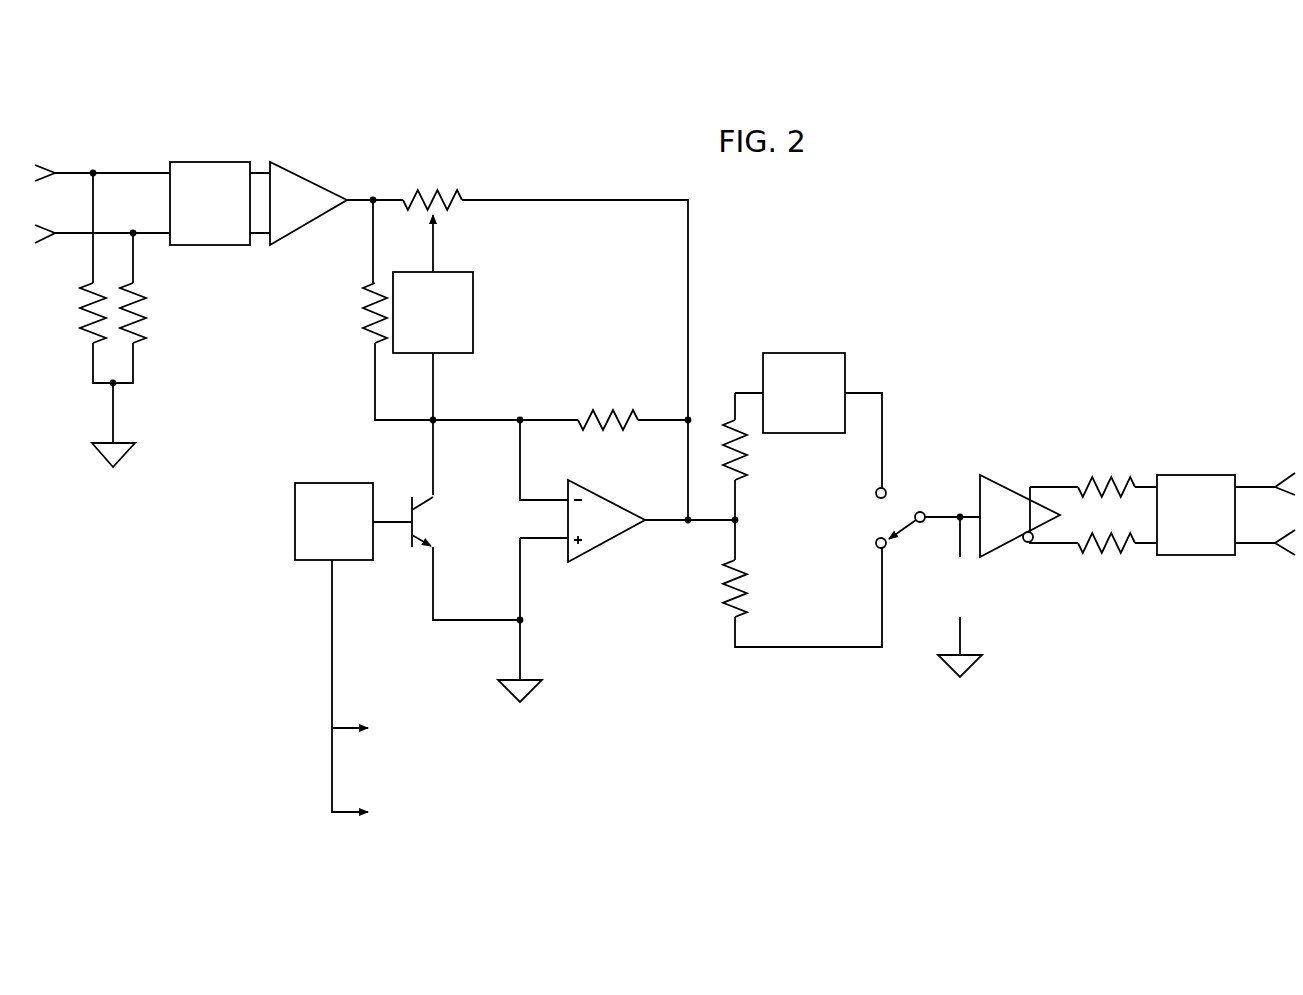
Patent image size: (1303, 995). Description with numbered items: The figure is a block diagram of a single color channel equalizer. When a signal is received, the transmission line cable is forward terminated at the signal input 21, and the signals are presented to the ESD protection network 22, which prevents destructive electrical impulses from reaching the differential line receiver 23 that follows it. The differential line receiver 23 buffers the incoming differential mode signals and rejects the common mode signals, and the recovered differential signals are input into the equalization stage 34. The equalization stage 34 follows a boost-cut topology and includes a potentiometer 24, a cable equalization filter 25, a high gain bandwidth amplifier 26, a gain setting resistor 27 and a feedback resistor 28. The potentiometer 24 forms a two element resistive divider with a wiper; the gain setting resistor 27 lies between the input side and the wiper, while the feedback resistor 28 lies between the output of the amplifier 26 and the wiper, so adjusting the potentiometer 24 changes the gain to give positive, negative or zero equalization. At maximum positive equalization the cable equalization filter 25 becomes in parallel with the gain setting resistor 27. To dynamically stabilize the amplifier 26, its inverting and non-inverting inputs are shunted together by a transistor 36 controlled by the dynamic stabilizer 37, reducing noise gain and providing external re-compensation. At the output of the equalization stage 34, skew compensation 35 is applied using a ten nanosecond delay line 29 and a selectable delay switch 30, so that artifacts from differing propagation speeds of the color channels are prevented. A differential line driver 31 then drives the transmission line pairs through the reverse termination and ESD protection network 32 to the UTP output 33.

The signal input 21 is at (85, 147).
The ESD protection network 22 is at (212, 147).
The differential line receiver 23 is at (307, 147).
The potentiometer 24 is at (445, 160).
The cable equalization filter 25 is at (492, 275).
The high gain bandwidth amplifier 26 is at (613, 572).
The gain setting resistor 27 is at (330, 337).
The feedback resistor 28 is at (594, 392).
The delay line 29 is at (807, 330).
The selectable delay switch 30 is at (913, 463).
The differential line driver 31 is at (1028, 450).
The reverse termination and ESD protection network 32 is at (1133, 450).
The UTP output 33 is at (1238, 450).
The equalization stage 34 is at (632, 104).
The skew compensation 35 is at (808, 700).
The transistor 36 is at (390, 466).
The dynamic stabilizer 37 is at (275, 542).